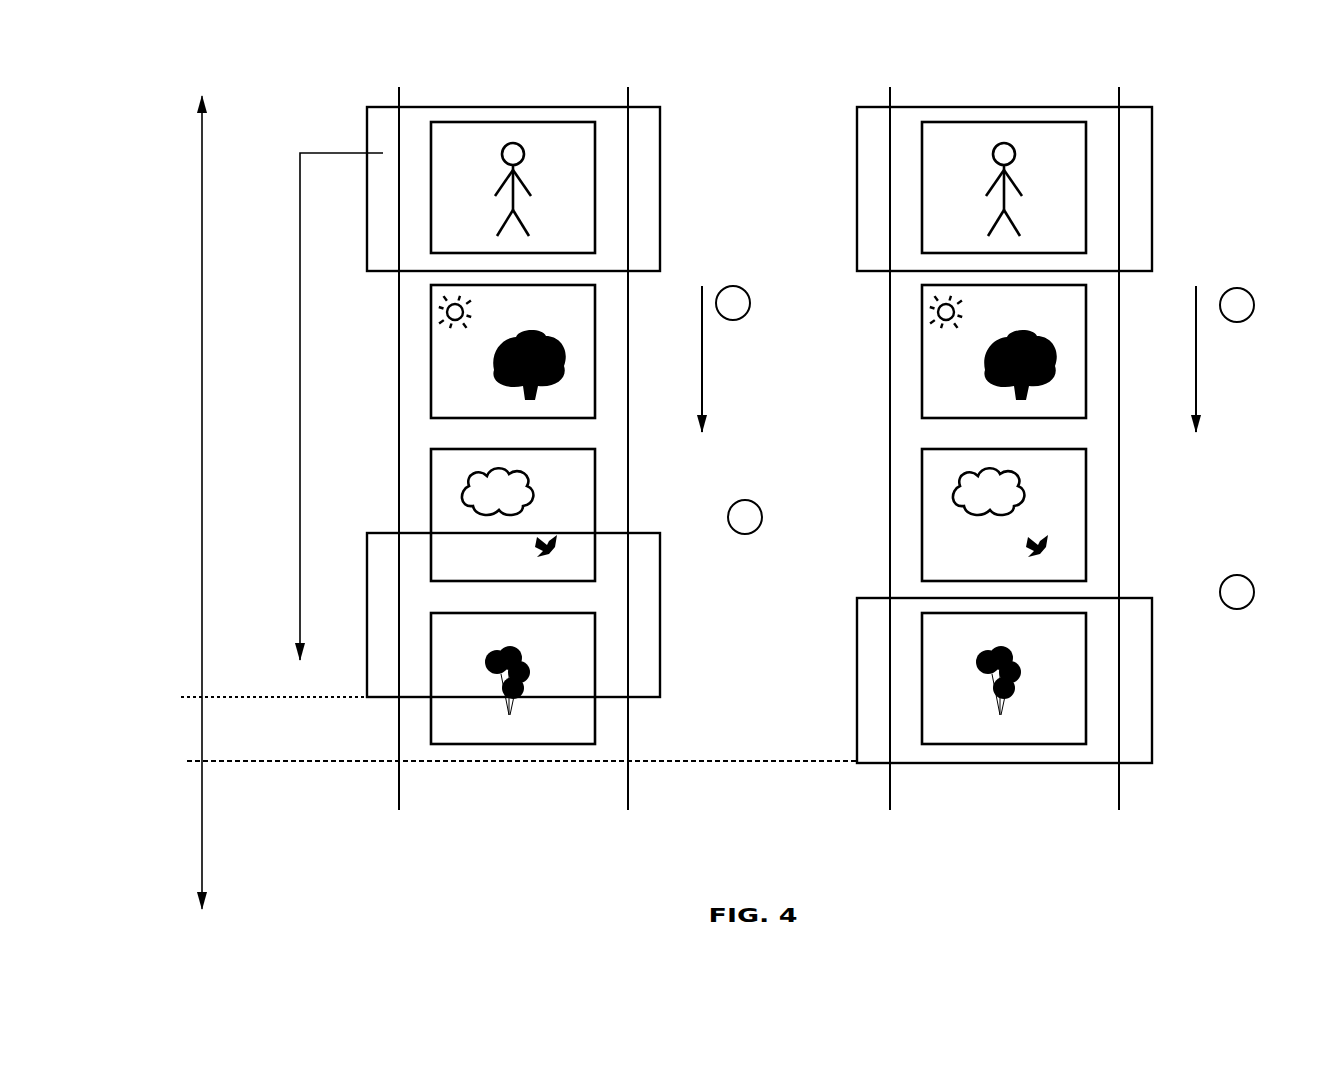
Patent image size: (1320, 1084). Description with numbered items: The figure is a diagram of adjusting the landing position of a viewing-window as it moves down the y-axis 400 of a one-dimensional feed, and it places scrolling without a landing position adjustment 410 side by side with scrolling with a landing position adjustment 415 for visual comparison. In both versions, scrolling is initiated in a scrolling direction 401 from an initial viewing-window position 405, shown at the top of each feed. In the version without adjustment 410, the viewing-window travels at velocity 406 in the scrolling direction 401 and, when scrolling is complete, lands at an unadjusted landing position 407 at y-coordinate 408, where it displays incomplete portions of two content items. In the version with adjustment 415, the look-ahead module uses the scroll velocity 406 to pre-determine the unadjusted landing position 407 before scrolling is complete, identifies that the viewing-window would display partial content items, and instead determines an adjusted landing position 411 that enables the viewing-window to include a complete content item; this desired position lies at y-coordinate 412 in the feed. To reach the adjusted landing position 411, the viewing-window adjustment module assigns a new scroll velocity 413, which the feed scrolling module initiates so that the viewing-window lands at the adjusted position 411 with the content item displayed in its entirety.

The y-axis 400 is at (153, 136).
The scrolling direction 401 is at (330, 406).
The initial viewing-window position 405 is at (1242, 199).
The scroll velocity 406 is at (722, 359).
The unadjusted landing position 407 is at (685, 659).
The y-coordinate of the unadjusted landing position 408 is at (142, 677).
The scrolling without landing position adjustment 410 is at (513, 481).
The adjusted landing position 411 is at (1176, 725).
The y-coordinate of the adjusted landing position 412 is at (122, 769).
The new scroll velocity 413 is at (1217, 359).
The scrolling with landing position adjustment 415 is at (1009, 481).